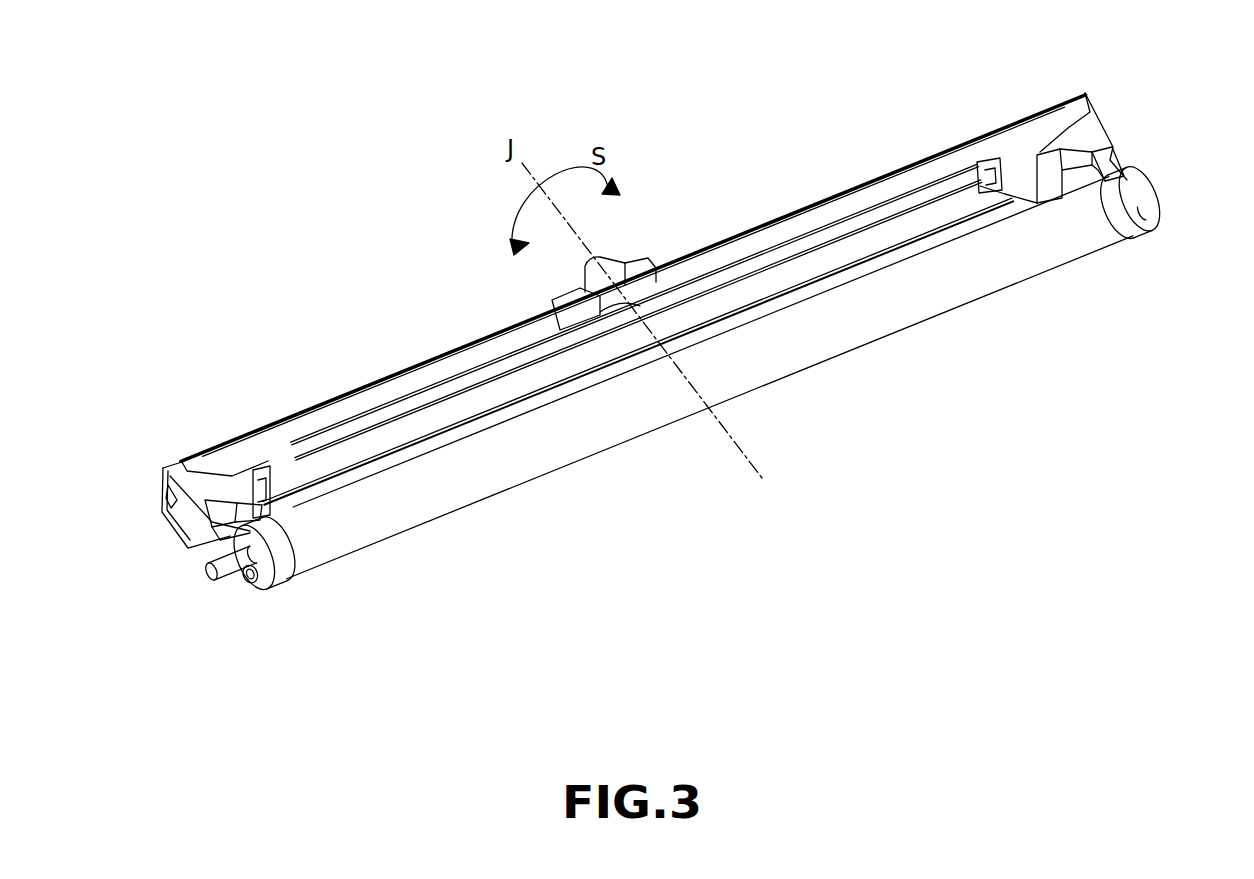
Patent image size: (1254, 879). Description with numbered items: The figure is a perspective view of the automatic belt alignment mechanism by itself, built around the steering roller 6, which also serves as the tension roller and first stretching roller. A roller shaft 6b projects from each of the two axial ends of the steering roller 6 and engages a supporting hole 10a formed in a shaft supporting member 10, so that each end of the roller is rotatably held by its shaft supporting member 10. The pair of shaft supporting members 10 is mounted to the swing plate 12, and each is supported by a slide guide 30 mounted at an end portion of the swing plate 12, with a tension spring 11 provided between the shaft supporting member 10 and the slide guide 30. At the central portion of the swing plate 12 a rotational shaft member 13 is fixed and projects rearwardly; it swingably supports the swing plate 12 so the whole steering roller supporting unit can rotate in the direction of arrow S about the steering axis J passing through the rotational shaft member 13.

The steering roller 6 is at (532, 458).
The roller shaft 6b is at (222, 580).
The shaft supporting member 10 is at (1150, 231).
The supporting hole 10a is at (200, 565).
The tension spring 11 is at (1118, 153).
The swing plate 12 is at (856, 195).
The rotational shaft member 13 is at (612, 252).
The slide guide 30 is at (1095, 130).